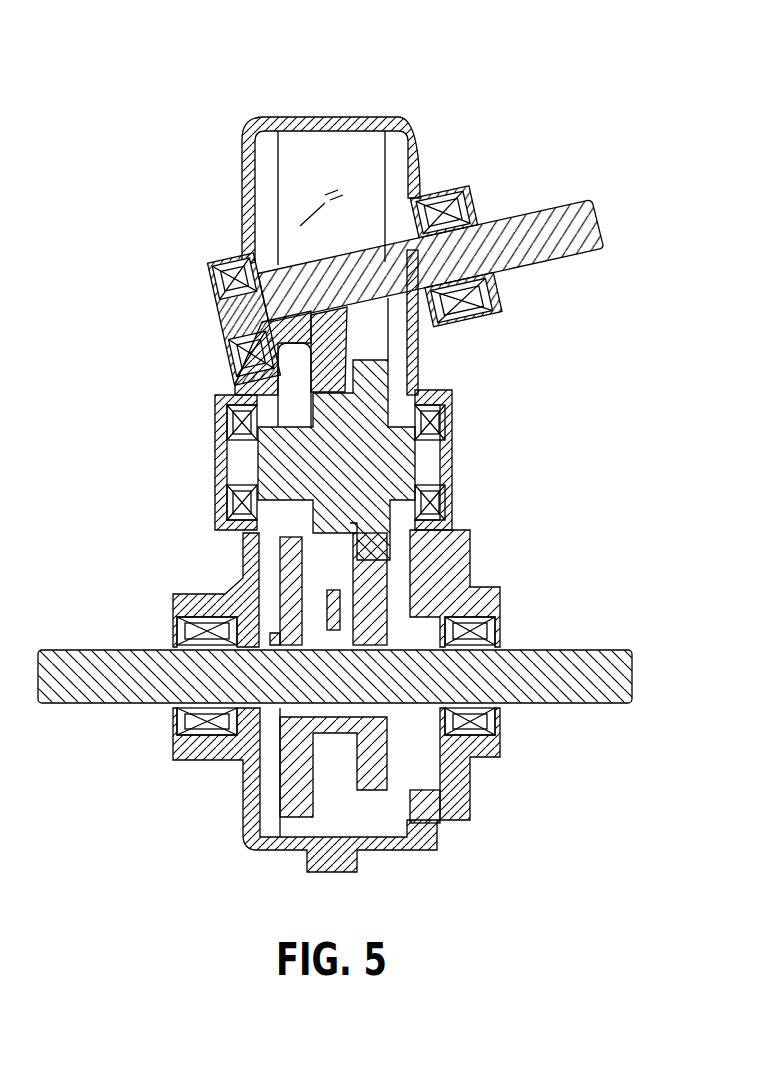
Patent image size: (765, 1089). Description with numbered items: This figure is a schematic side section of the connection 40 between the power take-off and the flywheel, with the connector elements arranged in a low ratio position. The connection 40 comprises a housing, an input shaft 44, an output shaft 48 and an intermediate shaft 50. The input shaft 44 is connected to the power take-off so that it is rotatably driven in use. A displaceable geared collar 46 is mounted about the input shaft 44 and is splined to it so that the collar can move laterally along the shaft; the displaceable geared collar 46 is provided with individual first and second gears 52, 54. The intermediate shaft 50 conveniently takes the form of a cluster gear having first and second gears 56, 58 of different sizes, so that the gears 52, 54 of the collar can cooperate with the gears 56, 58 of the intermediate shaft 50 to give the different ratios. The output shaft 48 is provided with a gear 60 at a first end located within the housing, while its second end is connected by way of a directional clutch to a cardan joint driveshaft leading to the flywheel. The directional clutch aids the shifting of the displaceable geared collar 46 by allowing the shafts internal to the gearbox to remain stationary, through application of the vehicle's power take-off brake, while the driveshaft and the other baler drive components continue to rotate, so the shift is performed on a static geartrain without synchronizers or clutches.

The connection 40 is at (337, 110).
The input shaft 44 is at (592, 661).
The displaceable geared collar 46 is at (366, 796).
The output shaft 48 is at (225, 300).
The intermediate shaft 50 is at (389, 468).
The first gear 52 is at (293, 560).
The second gear 54 is at (372, 590).
The first gear 56 is at (240, 397).
The second gear 58 is at (418, 370).
The gear 60 is at (444, 239).